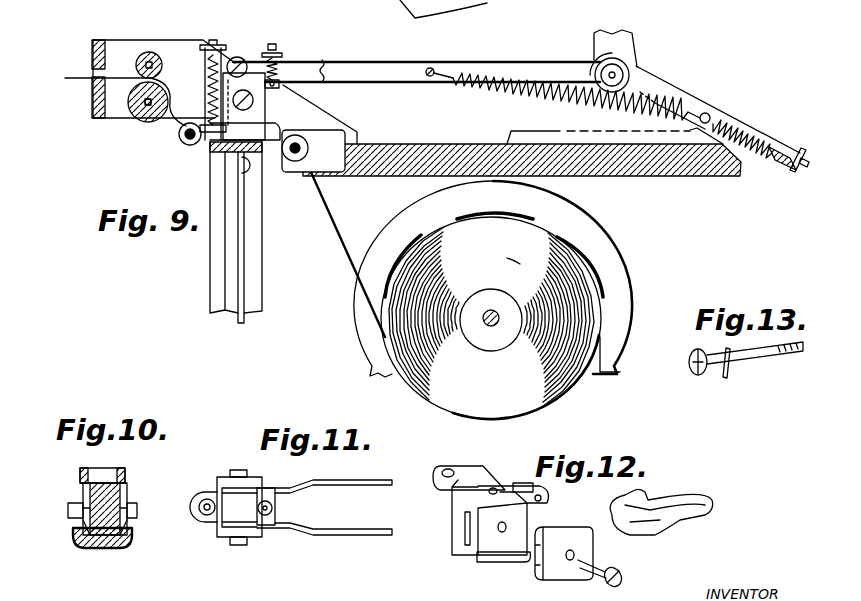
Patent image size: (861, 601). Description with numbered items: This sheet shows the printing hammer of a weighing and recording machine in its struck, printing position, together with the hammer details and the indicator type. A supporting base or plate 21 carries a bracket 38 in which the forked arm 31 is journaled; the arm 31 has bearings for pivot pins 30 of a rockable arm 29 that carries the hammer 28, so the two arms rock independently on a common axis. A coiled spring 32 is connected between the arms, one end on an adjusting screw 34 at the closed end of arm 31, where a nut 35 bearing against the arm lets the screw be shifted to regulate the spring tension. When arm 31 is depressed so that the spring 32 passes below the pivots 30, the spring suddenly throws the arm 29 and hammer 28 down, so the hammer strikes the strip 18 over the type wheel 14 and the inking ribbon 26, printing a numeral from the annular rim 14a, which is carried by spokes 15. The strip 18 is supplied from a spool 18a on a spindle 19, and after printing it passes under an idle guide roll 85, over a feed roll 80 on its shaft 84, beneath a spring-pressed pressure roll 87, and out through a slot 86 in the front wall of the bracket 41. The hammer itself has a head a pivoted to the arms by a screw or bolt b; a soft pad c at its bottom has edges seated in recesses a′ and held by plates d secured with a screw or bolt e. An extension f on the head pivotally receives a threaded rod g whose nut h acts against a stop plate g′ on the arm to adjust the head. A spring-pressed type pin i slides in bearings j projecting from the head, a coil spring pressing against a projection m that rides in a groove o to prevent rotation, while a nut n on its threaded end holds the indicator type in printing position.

In FIG. 9, the type wheel 14 is at (210, 250).
In FIG. 9, the annular rim 14a is at (286, 166).
In FIG. 9, the spokes 15 is at (240, 323).
In FIG. 9, the strip of paper 18 is at (68, 76).
In FIG. 9, the spool 18a is at (493, 300).
In FIG. 9, the spindle 19 is at (491, 330).
In FIG. 9, the supporting base or plate 21 is at (690, 176).
In FIG. 9, the inking ribbon 26 is at (210, 146).
In FIG. 9, the hammer or impresser 28 is at (300, 120).
In FIG. 9, the rockable arm 29 is at (396, 60).
In FIG. 11, the rockable arm 29 is at (357, 483).
In FIG. 9, the pivot pins 30 is at (620, 72).
In FIG. 9, the forked arm 31 is at (682, 93).
In FIG. 9, the coiled spring 32 is at (512, 88).
In FIG. 9, the adjusting screw 34 is at (735, 130).
In FIG. 9, the nut 35 is at (803, 152).
In FIG. 9, the bracket 38 is at (592, 44).
In FIG. 9, the bracket 41 is at (165, 52).
In FIG. 9, the feed roll 80 is at (152, 122).
In FIG. 9, the shaft 84 is at (140, 110).
In FIG. 9, the idle guide roll 85 is at (191, 122).
In FIG. 9, the slot 86 is at (92, 88).
In FIG. 9, the pressure roll 87 is at (149, 52).
In FIG. 10, the head a is at (100, 548).
In FIG. 11, the head a is at (250, 485).
In FIG. 12, the head a is at (497, 560).
In FIG. 10, the recesses a′ is at (85, 522).
In FIG. 12, the recesses a′ is at (450, 542).
In FIG. 9, the screw or bolt b is at (242, 60).
In FIG. 10, the screw or bolt b is at (127, 478).
In FIG. 9, the pad c is at (250, 130).
In FIG. 10, the pad c is at (125, 546).
In FIG. 12, the pad c is at (670, 535).
In FIG. 10, the plates d is at (88, 500).
In FIG. 12, the plates d is at (560, 575).
In FIG. 10, the screw or bolt e is at (137, 512).
In FIG. 12, the screw or bolt e is at (605, 568).
In FIG. 12, the extension f is at (520, 480).
In FIG. 9, the threaded rod or screw g is at (278, 50).
In FIG. 11, the threaded rod or screw g is at (272, 508).
In FIG. 9, the stop or plate g′ is at (284, 66).
In FIG. 11, the stop or plate g′ is at (272, 490).
In FIG. 11, the nut h is at (265, 515).
In FIG. 9, the spring-pressed type member i is at (205, 95).
In FIG. 13, the spring-pressed type member i is at (720, 372).
In FIG. 12, the bearings j is at (466, 468).
In FIG. 13, the projection m is at (732, 370).
In FIG. 9, the nut n is at (218, 48).
In FIG. 12, the slot or groove o is at (472, 548).